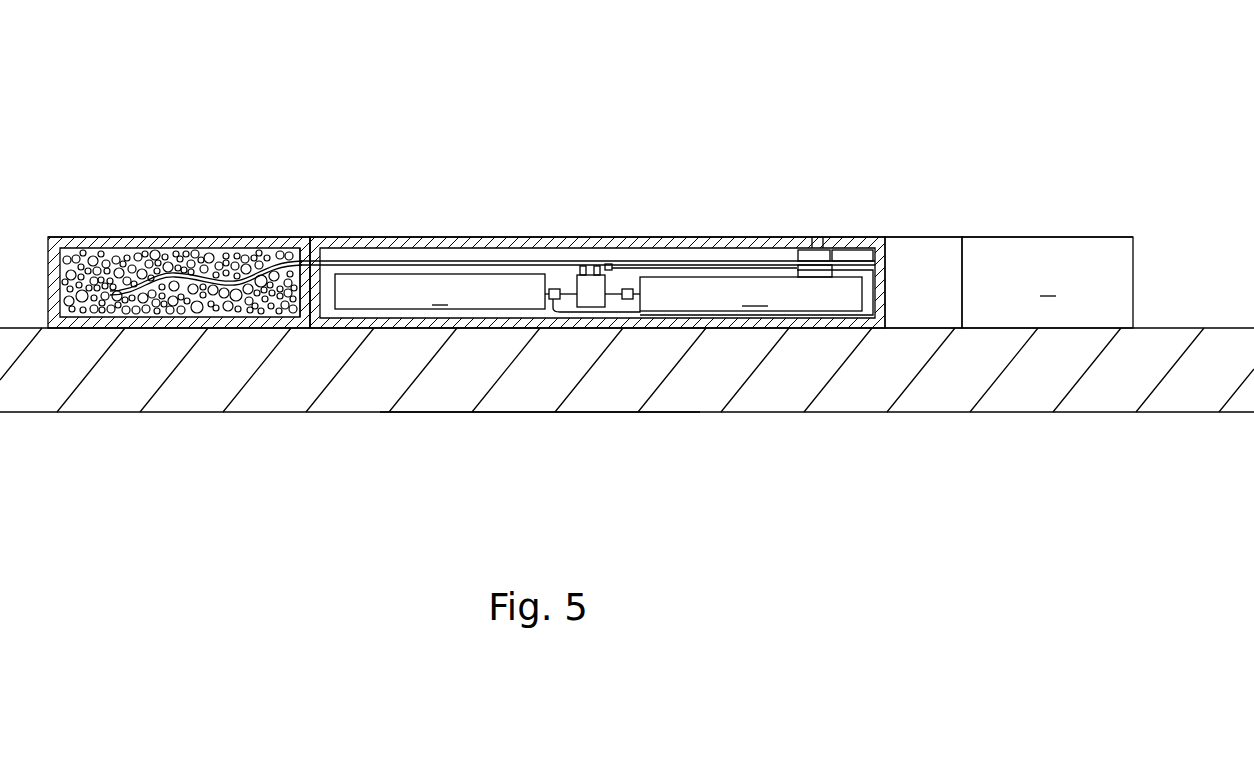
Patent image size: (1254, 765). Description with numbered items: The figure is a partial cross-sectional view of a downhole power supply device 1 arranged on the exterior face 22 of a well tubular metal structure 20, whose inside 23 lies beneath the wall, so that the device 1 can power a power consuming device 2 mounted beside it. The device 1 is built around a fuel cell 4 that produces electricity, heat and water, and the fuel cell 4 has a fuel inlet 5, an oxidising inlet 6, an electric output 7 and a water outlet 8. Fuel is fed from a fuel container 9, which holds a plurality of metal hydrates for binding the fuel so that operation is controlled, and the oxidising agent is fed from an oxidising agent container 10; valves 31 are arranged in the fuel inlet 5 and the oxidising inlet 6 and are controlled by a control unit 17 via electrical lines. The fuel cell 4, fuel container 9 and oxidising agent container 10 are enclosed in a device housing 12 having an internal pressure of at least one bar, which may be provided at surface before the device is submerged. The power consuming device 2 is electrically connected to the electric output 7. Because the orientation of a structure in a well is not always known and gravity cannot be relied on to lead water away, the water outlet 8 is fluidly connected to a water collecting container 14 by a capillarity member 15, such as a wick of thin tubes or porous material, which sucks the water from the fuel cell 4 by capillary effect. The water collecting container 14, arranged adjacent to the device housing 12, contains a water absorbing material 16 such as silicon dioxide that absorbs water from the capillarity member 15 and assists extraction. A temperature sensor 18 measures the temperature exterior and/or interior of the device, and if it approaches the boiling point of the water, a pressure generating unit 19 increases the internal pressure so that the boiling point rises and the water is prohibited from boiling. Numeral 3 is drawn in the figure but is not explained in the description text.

The downhole power supply device 1 is at (1040, 173).
The power consuming device 2 is at (1047, 282).
The sensor unit 3 is at (78, 168).
The fuel cell 4 is at (592, 275).
The fuel inlet 5 is at (582, 266).
The oxidising inlet 6 is at (612, 266).
The electric output 7 is at (756, 262).
The water outlet 8 is at (596, 266).
The fuel container 9 is at (440, 291).
The oxidising agent container 10 is at (751, 294).
The device housing 12 is at (436, 245).
The water collecting container 14 is at (200, 240).
The capillarity member 15 is at (265, 240).
The water absorbing material 16 is at (110, 247).
The control unit 17 is at (862, 255).
The temperature sensor 18 is at (818, 256).
The pressure generating unit 19 is at (930, 270).
The well tubular metal structure 20 is at (1180, 378).
The exterior face 22 is at (1155, 328).
The inside 23 is at (520, 463).
The valves 31 is at (553, 289).